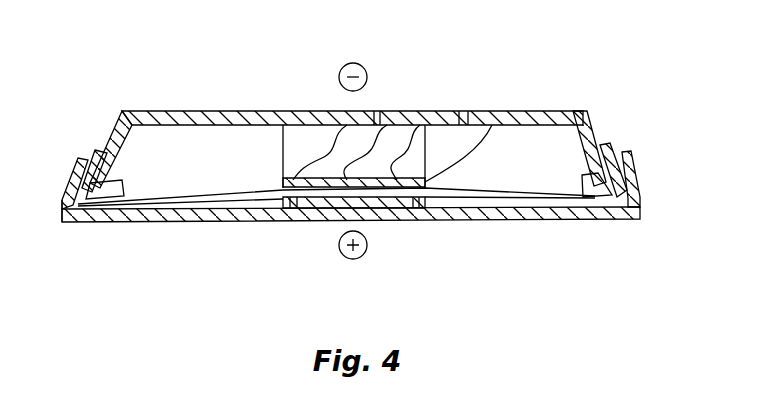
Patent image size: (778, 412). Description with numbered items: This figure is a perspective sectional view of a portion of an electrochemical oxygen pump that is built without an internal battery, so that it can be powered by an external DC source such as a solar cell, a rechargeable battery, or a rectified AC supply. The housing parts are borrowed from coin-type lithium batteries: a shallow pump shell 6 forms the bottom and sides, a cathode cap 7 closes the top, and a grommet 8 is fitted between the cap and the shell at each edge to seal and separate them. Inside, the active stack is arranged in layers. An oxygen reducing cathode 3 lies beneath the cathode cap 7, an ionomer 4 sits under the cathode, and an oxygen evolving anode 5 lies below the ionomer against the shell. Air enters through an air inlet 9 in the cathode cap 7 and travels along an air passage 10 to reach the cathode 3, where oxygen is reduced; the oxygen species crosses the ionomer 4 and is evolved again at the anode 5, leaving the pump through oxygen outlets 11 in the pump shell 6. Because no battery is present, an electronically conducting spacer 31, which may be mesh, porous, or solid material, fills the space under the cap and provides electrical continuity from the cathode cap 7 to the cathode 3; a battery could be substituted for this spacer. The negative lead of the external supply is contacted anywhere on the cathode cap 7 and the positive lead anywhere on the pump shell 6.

The oxygen reducing cathode 3 is at (513, 143).
The ionomer 4 is at (500, 188).
The oxygen evolving anode 5 is at (462, 209).
The pump shell 6 is at (643, 193).
The cathode cap 7 is at (495, 110).
The grommet 8 is at (612, 147).
The air inlet 9 is at (463, 110).
The air passage 10 is at (573, 110).
The oxygen outlets 11 is at (407, 210).
The electronically conducting spacer 31 is at (385, 108).